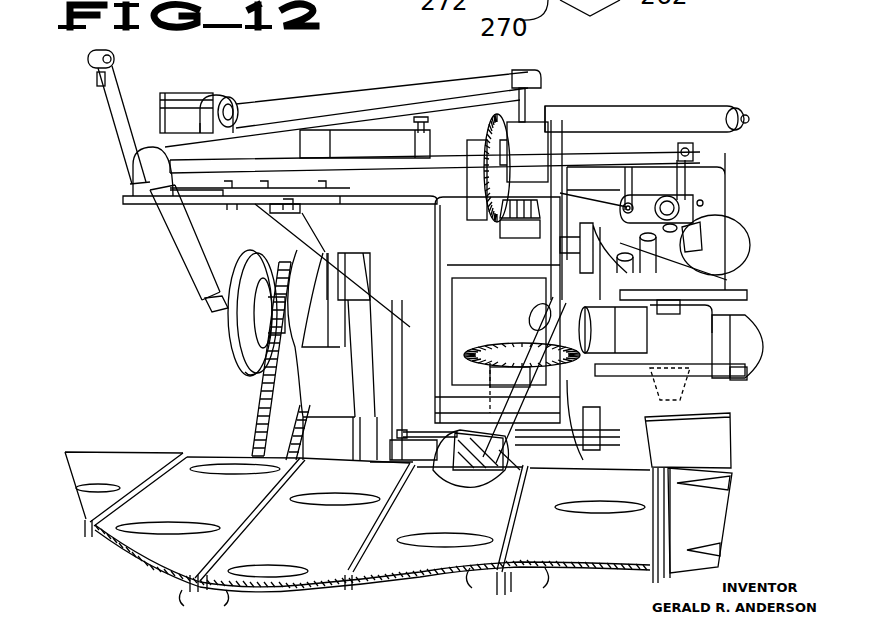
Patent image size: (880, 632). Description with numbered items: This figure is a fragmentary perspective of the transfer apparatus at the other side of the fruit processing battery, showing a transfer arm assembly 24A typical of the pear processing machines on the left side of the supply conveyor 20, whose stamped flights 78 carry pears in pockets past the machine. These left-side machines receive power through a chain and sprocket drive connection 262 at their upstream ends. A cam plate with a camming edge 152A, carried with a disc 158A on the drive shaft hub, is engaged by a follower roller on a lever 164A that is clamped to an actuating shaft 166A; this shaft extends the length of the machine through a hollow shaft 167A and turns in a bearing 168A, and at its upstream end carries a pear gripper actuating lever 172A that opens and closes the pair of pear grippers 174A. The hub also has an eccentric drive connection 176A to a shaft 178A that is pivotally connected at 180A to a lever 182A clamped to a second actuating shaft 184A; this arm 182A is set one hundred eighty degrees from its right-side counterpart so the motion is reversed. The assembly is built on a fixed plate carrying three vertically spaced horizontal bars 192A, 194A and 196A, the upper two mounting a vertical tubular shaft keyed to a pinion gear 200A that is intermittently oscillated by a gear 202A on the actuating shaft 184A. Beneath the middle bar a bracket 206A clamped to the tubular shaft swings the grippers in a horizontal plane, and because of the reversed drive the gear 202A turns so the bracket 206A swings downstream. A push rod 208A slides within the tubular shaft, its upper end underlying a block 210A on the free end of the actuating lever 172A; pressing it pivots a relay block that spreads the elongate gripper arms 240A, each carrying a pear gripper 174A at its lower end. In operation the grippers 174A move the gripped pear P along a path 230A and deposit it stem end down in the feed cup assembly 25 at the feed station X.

The supply conveyor 20 is at (150, 568).
The transfer arm assembly 24A is at (505, 478).
The cup assembly 25 is at (713, 413).
The supply conveyor flight 78 is at (317, 576).
The camming edge 152A is at (230, 337).
The disc 158A is at (250, 372).
The lever 164A is at (165, 138).
The actuating shaft 166A is at (238, 103).
The hollow shaft 167A is at (695, 103).
The bearing 168A is at (218, 97).
The pear gripper actuating lever 172A is at (402, 90).
The pear grippers 174A is at (470, 468).
The eccentric drive connection 176A is at (213, 307).
The shaft 178A is at (167, 228).
The pivotal connection 180A is at (88, 58).
The lever 182A is at (130, 133).
The actuating shaft 184A is at (168, 166).
The horizontal bar 192A is at (538, 157).
The horizontal bar 194A is at (468, 257).
The horizontal bar 196A is at (453, 402).
The pinion gear 200A is at (500, 222).
The gear 202A is at (487, 192).
The bracket 206A is at (515, 295).
The push rod 208A is at (538, 88).
The block 210A is at (520, 70).
The path 230A is at (713, 302).
The gripper arm 240A is at (515, 432).
The chain and sprocket drive connection 262 is at (262, 398).
The pear P is at (412, 465).
The feed station X is at (693, 389).